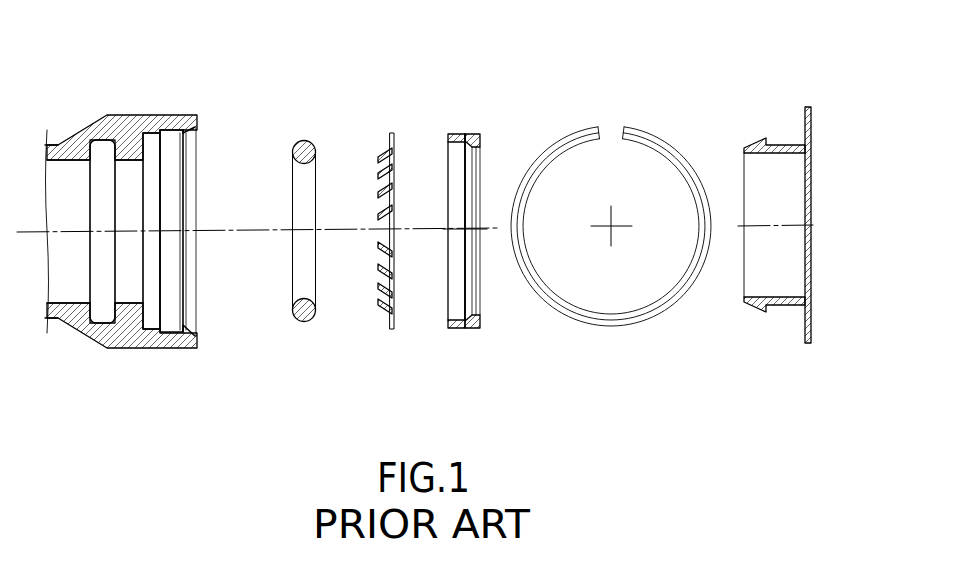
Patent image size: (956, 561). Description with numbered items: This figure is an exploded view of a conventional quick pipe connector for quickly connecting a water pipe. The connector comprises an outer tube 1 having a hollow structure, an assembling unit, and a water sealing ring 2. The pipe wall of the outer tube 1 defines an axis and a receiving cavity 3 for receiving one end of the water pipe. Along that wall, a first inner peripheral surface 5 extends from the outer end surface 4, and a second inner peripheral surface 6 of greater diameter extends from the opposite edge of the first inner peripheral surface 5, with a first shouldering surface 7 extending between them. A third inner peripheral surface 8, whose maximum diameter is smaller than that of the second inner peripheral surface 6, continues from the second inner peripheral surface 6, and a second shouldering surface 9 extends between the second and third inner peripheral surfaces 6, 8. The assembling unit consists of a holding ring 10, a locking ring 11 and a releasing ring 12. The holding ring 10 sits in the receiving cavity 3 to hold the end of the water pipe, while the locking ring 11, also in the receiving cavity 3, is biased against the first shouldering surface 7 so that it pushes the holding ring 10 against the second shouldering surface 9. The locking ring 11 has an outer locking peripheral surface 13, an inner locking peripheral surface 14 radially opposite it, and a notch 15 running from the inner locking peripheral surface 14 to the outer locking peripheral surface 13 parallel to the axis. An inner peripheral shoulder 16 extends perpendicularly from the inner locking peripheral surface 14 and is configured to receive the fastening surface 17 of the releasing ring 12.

The outer tube 1 is at (130, 130).
The water sealing ring 2 is at (304, 143).
The receiving cavity 3 is at (150, 163).
The outer end surface 4 is at (195, 345).
The first inner peripheral surface 5 is at (182, 325).
The second inner peripheral surface 6 is at (170, 332).
The first shouldering surface 7 is at (178, 133).
The third inner peripheral surface 8 is at (128, 310).
The second shouldering surface 9 is at (142, 139).
The holding ring 10 is at (393, 135).
The locking ring 11 is at (479, 130).
The releasing ring 12 is at (786, 132).
The outer locking peripheral surface 13 is at (467, 130).
The inner locking peripheral surface 14 is at (457, 315).
The notch 15 is at (613, 132).
The inner peripheral shoulder 16 is at (466, 315).
The fastening surface 17 is at (767, 308).